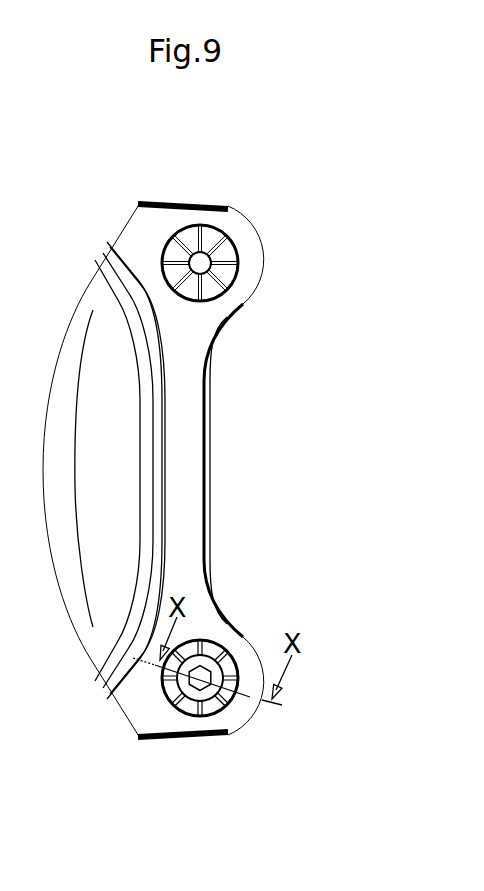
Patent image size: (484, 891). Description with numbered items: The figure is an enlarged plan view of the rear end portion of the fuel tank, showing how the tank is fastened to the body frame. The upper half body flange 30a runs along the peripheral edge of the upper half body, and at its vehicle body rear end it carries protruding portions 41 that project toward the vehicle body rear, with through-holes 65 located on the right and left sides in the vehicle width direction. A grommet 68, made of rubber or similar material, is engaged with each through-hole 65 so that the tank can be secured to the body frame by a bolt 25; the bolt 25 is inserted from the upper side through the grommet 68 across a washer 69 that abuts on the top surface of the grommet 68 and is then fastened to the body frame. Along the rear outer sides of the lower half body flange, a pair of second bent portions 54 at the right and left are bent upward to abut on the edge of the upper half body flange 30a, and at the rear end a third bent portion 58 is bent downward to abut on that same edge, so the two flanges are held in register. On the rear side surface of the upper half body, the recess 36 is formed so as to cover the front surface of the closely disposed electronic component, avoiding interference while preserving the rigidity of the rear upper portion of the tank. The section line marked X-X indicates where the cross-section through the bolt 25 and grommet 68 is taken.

The bolt 25 is at (203, 685).
The upper half body flange 30a is at (185, 522).
The recess 36 is at (100, 390).
The protruding portion 41 is at (233, 227).
The second bent portion 54 is at (178, 206).
The third bent portion 58 is at (212, 452).
The through-hole 65 is at (212, 257).
The grommet 68 is at (211, 232).
The washer 69 is at (207, 658).